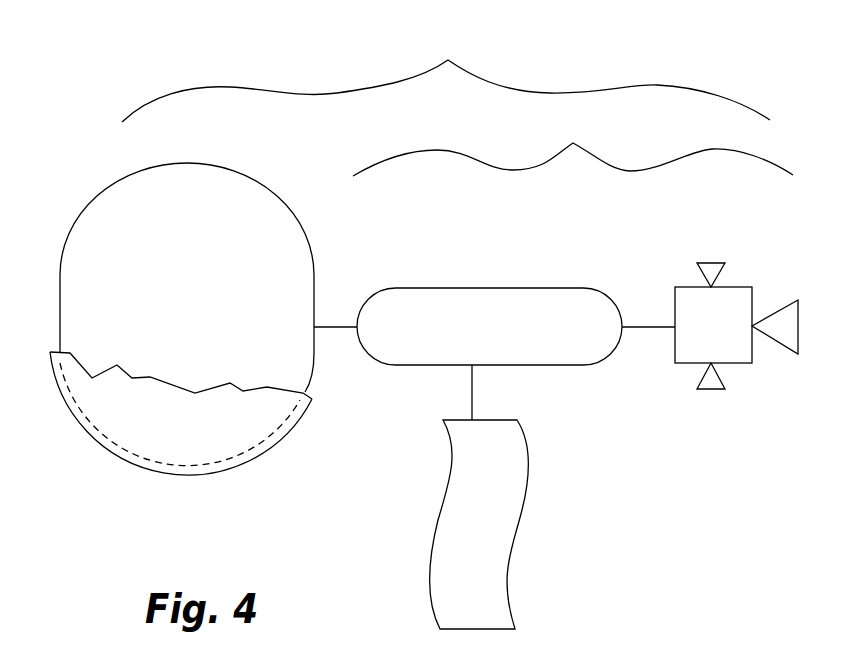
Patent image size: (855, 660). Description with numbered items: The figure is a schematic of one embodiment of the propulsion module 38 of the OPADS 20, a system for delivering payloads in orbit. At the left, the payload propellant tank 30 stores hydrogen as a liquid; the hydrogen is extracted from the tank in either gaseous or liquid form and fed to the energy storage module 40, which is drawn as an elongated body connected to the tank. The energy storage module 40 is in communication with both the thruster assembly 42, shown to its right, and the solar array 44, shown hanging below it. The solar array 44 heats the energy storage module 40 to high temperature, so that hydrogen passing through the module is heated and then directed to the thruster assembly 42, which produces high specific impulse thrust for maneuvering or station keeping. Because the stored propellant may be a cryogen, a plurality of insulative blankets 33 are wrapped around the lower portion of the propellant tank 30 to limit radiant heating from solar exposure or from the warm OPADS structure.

The OPADS 20 is at (448, 60).
The propulsion module 38 is at (573, 143).
The payload propellant tank 30 is at (182, 165).
The insulative blankets 33 is at (85, 432).
The energy storage module 40 is at (448, 288).
The thruster assembly 42 is at (735, 287).
The solar array 44 is at (510, 527).